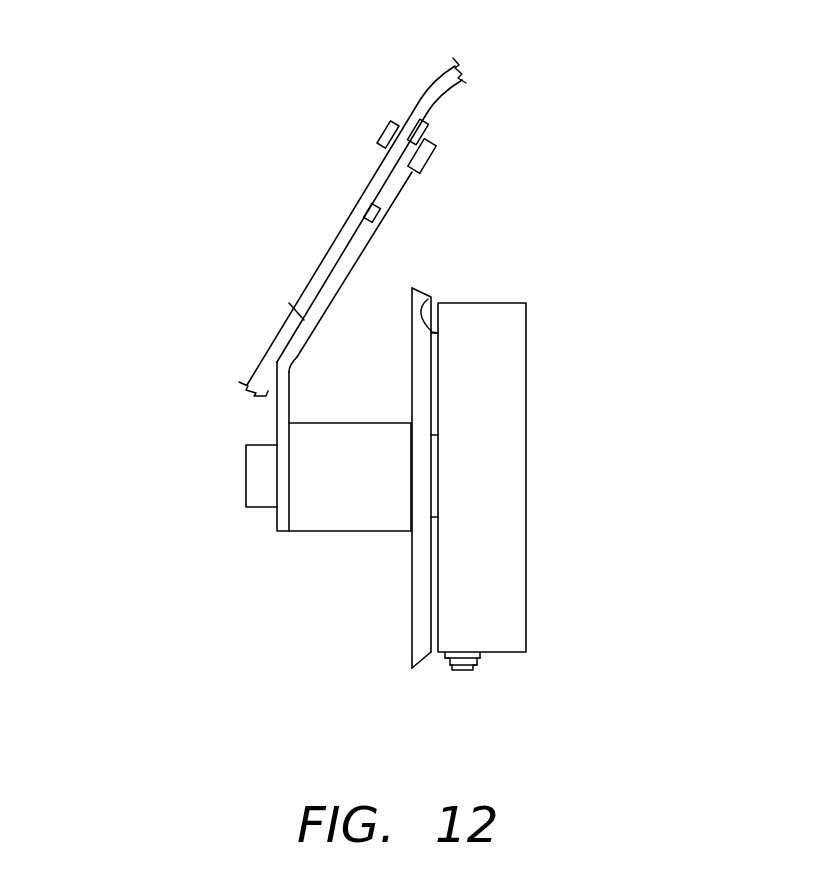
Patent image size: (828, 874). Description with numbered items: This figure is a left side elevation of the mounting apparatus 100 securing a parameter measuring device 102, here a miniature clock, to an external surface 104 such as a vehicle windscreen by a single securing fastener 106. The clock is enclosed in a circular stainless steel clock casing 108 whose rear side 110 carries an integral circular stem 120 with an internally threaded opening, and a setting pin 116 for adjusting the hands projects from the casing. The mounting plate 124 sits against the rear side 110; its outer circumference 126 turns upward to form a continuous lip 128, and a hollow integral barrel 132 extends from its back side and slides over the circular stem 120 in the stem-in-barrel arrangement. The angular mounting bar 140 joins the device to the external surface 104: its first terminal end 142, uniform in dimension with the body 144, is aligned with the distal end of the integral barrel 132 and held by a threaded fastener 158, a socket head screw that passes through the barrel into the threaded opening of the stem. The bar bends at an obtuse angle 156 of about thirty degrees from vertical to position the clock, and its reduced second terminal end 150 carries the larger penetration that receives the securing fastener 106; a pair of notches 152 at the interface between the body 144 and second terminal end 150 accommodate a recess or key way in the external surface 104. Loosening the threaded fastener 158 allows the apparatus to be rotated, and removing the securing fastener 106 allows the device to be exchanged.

The mounting apparatus 100 is at (247, 425).
The parameter measuring device 102 is at (505, 303).
The external surface 104 is at (423, 85).
The securing fastener 106 is at (437, 160).
The clock casing 108 is at (512, 398).
The rear side 110 is at (430, 298).
The setting pin 116 is at (463, 670).
The circular stem 120 is at (438, 487).
The mounting plate 124 is at (413, 665).
The outer circumference 126 is at (431, 364).
The continuous lip 128 is at (412, 627).
The integral barrel 132 is at (308, 520).
The mounting bar 140 is at (335, 278).
The first terminal end 142 is at (277, 523).
The body 144 is at (292, 308).
The second terminal end 150 is at (428, 108).
The pair of notches 152 is at (382, 219).
The obtuse angle 156 is at (296, 370).
The threaded fastener 158 is at (245, 478).